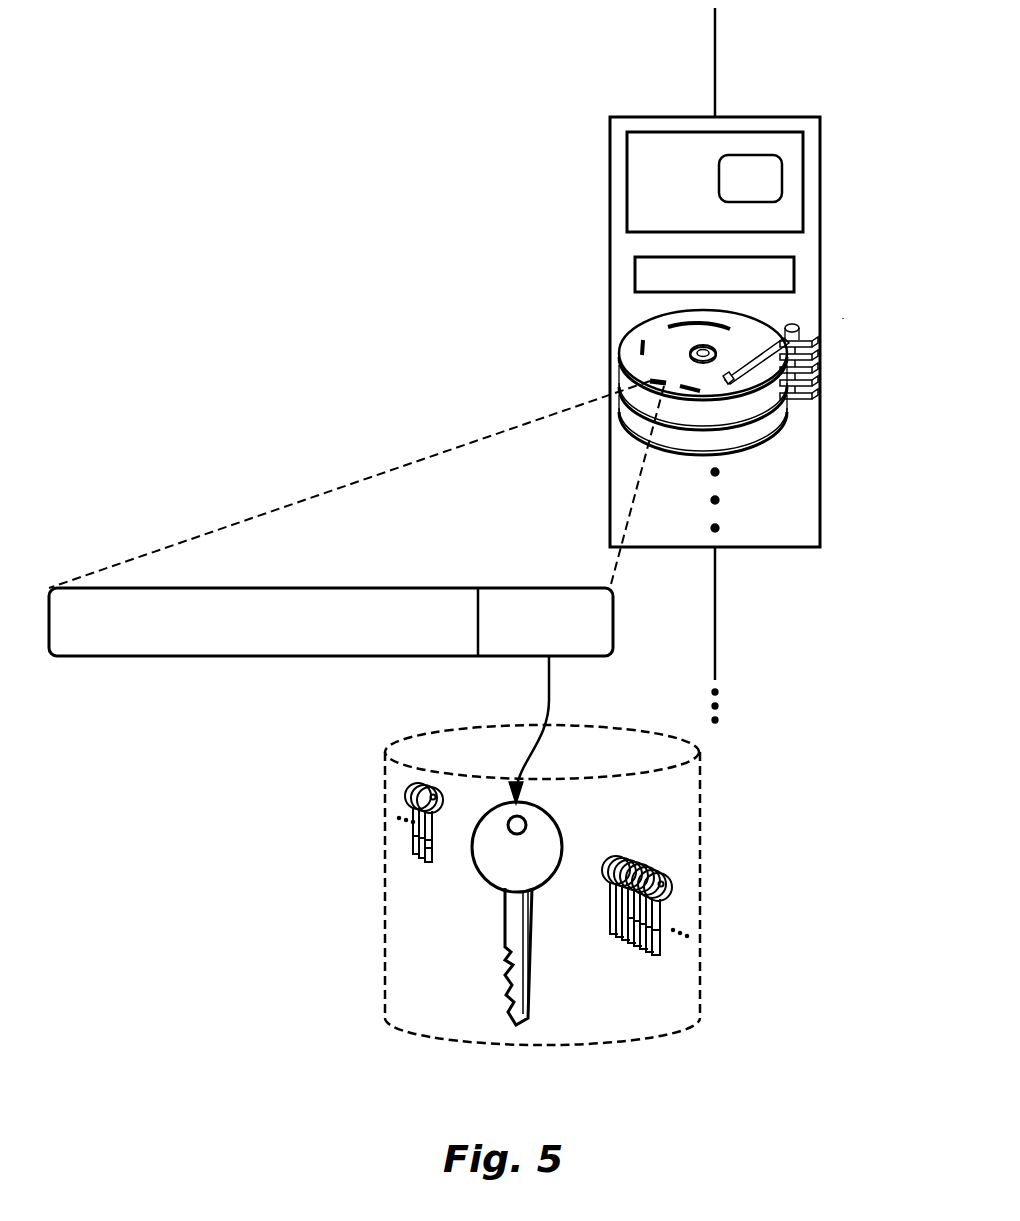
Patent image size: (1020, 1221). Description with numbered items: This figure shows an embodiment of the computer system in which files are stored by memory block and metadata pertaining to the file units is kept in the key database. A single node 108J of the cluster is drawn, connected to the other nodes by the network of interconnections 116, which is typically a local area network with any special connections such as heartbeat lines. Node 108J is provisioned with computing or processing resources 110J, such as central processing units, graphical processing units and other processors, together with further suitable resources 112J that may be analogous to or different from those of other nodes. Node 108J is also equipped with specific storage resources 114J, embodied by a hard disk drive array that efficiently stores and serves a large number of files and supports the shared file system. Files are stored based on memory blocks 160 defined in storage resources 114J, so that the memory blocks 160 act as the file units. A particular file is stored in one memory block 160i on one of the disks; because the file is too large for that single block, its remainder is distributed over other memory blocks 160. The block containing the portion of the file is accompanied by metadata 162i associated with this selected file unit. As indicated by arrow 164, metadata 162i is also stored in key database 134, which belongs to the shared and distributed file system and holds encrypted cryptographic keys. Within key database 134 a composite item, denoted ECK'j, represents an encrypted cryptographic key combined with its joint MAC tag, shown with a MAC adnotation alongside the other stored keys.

The network of interconnections 116 is at (715, 50).
The node 108J is at (662, 117).
The computing or processing resources 110J is at (770, 132).
The resources 112J is at (635, 265).
The storage resources 114J is at (847, 306).
The memory blocks 160 is at (594, 338).
The memory block 160i is at (657, 385).
The metadata 162i is at (534, 588).
The arrow 164 is at (543, 720).
The key database 134 is at (385, 858).
The encrypted cryptographic key with MAC tag ECK'j is at (564, 913).